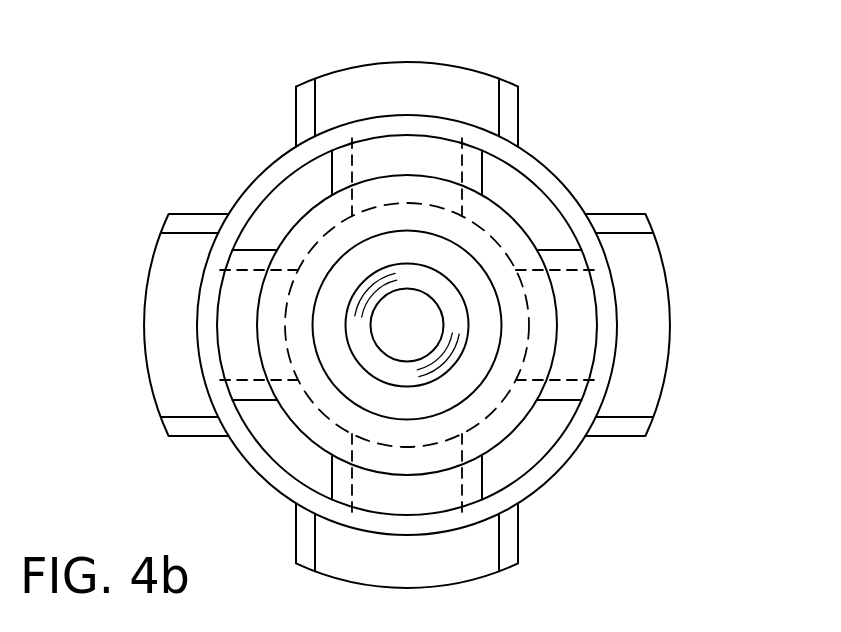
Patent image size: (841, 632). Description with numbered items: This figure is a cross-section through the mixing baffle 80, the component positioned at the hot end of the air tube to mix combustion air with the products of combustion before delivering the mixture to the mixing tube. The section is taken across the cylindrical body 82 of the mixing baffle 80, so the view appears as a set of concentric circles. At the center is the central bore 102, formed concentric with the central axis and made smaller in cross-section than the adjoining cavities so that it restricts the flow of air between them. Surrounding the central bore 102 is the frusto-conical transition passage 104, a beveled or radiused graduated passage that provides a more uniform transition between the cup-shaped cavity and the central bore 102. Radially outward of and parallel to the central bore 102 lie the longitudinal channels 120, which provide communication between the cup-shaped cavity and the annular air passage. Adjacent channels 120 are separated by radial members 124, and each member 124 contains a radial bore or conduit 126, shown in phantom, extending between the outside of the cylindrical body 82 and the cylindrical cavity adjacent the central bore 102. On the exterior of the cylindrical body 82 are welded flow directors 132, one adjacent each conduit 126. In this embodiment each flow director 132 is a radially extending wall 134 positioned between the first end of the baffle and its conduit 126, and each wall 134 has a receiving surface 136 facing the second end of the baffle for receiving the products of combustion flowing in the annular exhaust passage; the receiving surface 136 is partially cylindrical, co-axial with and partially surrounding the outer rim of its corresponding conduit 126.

The mixing baffle 80 is at (243, 73).
The cylindrical body 82 is at (233, 202).
The central bore 102 is at (435, 336).
The frusto-conical transition passage 104 is at (407, 325).
The longitudinal channels 120 is at (298, 182).
The radial members 124 is at (470, 175).
The radial bores or conduits 126 is at (377, 153).
The flow directors 132 is at (469, 66).
The radially extending wall 134 is at (670, 295).
The receiving surface 136 is at (643, 337).